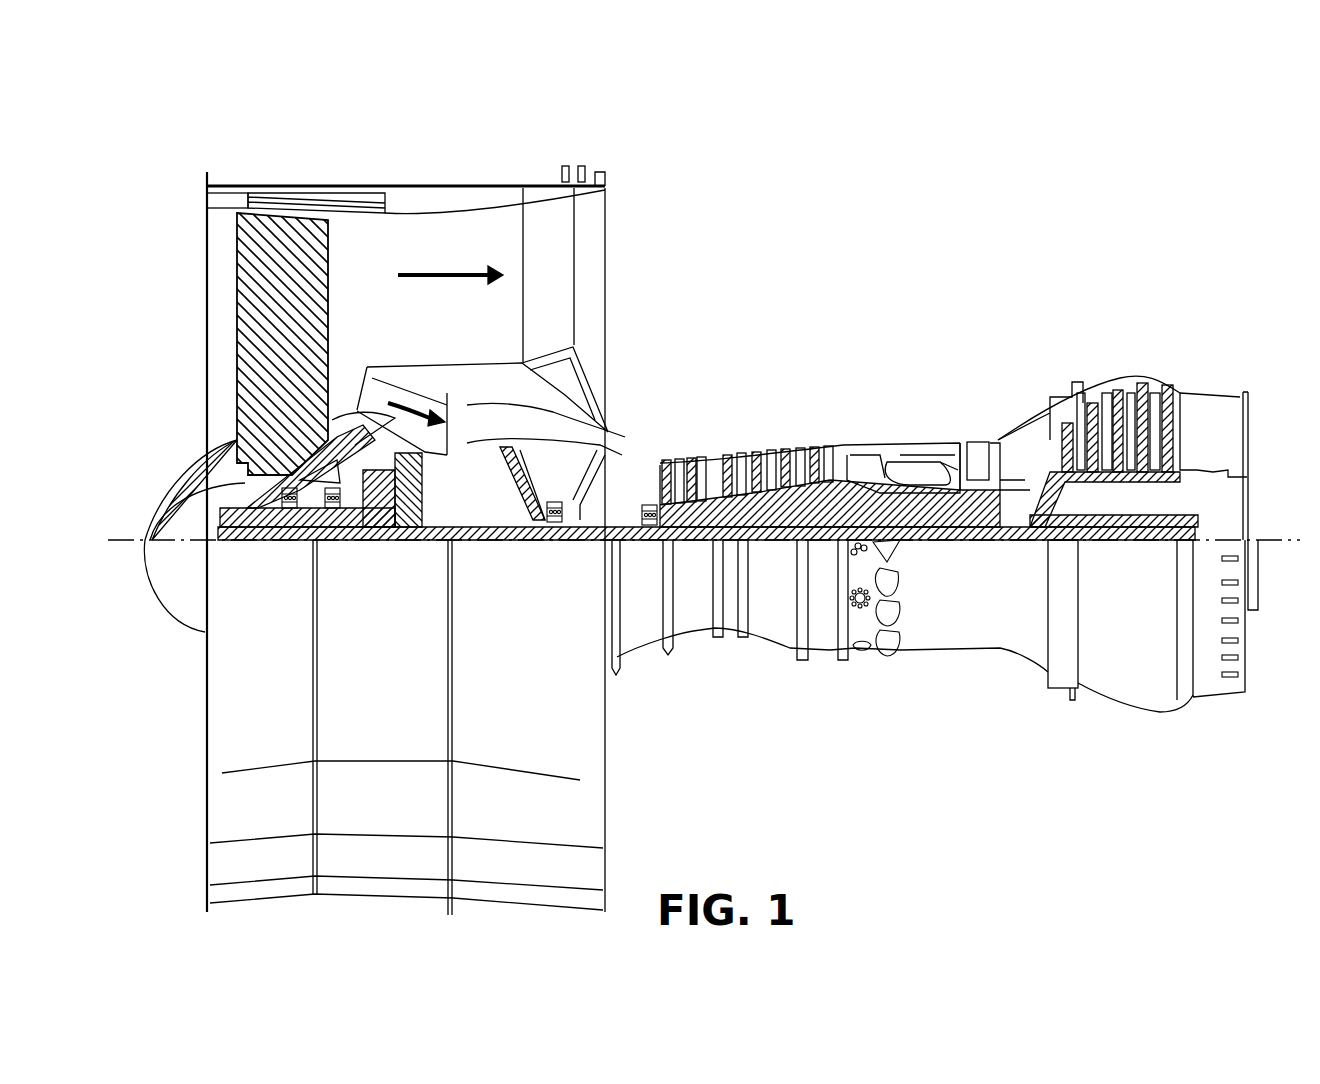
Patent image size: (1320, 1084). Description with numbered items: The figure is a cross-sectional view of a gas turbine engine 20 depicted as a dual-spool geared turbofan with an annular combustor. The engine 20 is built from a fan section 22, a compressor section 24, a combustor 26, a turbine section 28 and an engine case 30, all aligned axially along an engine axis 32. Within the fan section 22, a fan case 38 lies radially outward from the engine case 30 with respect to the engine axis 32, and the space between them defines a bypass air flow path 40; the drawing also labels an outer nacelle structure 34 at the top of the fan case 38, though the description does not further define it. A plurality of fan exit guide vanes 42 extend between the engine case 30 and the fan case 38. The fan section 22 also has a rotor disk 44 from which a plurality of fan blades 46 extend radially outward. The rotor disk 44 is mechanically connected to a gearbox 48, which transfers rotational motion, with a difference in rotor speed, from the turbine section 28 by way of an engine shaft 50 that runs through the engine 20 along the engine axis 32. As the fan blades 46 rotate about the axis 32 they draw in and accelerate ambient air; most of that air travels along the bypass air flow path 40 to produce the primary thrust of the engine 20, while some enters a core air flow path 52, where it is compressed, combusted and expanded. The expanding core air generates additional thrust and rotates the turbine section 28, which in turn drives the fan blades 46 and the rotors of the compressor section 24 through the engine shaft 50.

The gas turbine engine 20 is at (995, 217).
The fan section 22 is at (270, 174).
The compressor section 24 is at (713, 449).
The combustor 26 is at (921, 428).
The turbine section 28 is at (985, 430).
The engine case 30 is at (782, 642).
The engine axis 32 is at (1265, 540).
The fan case / nacelle 34 is at (597, 160).
The fan case 38 is at (382, 195).
The bypass air flow path 40 is at (432, 275).
The fan exit guide vanes 42 is at (553, 280).
The rotor disk 44 is at (205, 487).
The fan blades 46 is at (240, 265).
The gearbox 48 is at (405, 545).
The engine shaft 50 is at (633, 545).
The core air flow path 52 is at (415, 405).